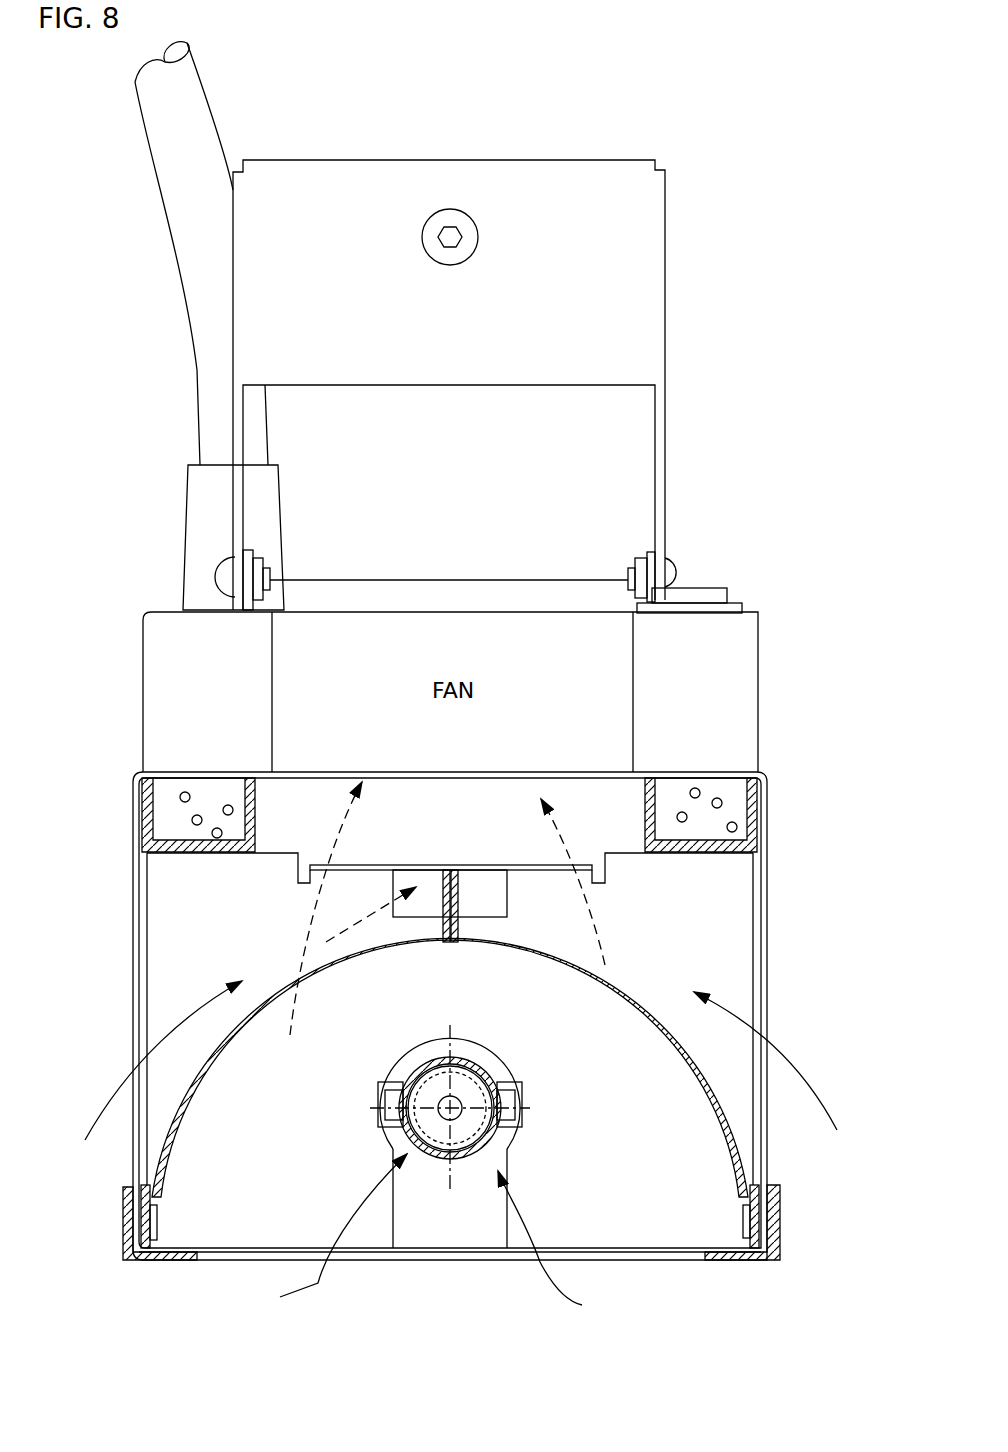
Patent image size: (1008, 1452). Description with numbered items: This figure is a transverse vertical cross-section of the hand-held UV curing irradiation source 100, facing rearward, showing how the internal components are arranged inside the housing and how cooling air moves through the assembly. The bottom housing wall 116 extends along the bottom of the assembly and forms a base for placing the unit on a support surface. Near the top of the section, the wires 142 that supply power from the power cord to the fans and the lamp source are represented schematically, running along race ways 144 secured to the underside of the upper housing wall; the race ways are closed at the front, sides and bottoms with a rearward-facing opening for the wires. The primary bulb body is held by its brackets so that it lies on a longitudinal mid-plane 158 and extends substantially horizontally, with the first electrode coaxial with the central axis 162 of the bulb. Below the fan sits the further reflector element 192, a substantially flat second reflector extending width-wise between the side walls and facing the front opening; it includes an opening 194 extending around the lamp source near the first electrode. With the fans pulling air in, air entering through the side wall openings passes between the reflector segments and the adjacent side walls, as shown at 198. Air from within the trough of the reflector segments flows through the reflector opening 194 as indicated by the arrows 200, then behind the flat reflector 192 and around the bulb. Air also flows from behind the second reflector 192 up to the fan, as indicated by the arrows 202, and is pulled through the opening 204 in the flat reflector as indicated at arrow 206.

The UV curing irradiation source 100 is at (56, 108).
The bottom housing wall 116 is at (202, 1218).
The wires 142 is at (180, 800).
The race ways 144 is at (165, 857).
The longitudinal mid-plane 158 is at (470, 1022).
The central axis 162 is at (446, 1120).
The further reflector element 192 is at (150, 1265).
The opening 194 is at (507, 1230).
The air flow 198 is at (110, 1098).
The arrows 200 is at (439, 1235).
The arrows 202 is at (345, 826).
The opening 204 is at (495, 885).
The arrow 206 is at (346, 912).